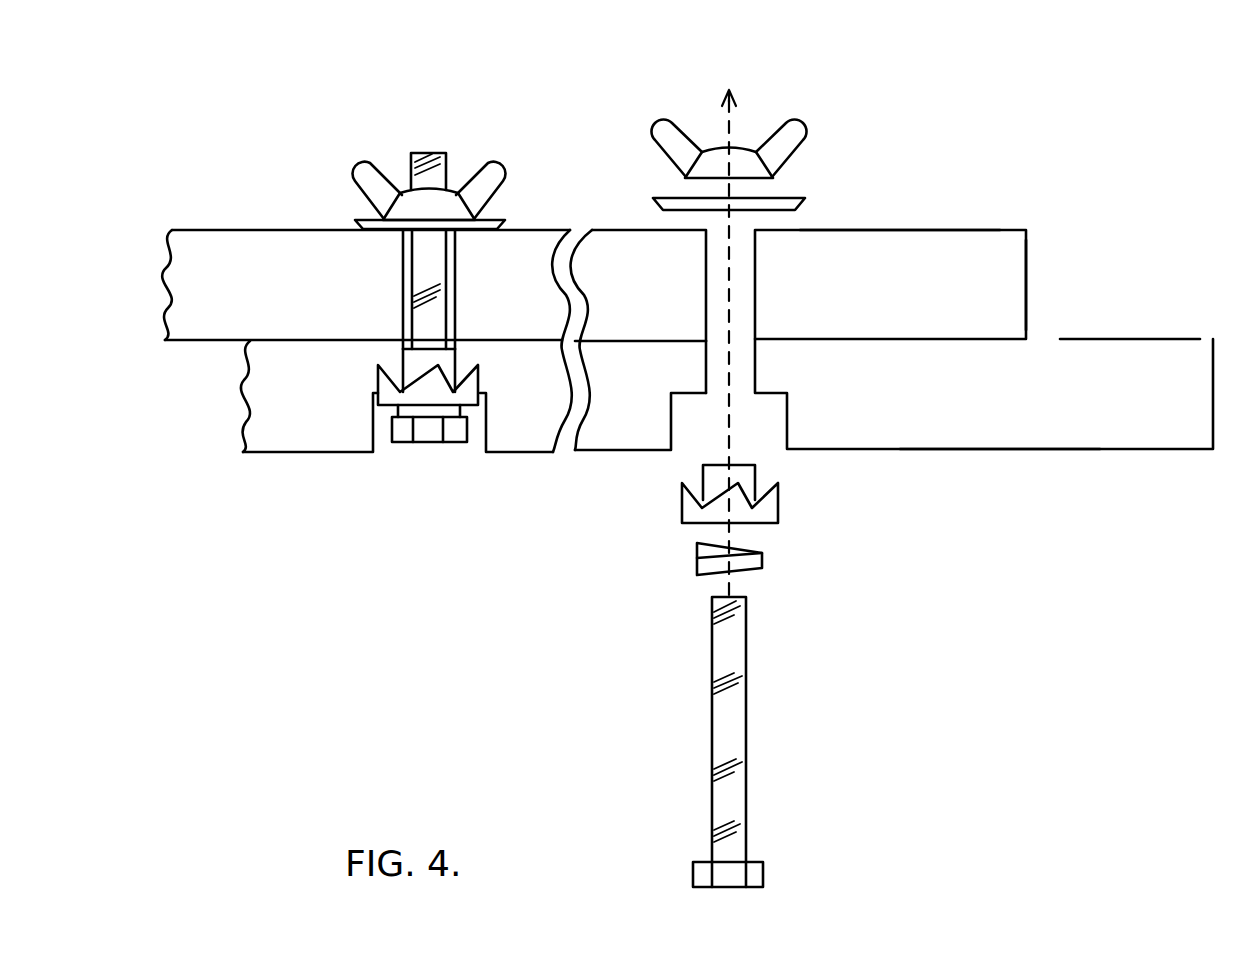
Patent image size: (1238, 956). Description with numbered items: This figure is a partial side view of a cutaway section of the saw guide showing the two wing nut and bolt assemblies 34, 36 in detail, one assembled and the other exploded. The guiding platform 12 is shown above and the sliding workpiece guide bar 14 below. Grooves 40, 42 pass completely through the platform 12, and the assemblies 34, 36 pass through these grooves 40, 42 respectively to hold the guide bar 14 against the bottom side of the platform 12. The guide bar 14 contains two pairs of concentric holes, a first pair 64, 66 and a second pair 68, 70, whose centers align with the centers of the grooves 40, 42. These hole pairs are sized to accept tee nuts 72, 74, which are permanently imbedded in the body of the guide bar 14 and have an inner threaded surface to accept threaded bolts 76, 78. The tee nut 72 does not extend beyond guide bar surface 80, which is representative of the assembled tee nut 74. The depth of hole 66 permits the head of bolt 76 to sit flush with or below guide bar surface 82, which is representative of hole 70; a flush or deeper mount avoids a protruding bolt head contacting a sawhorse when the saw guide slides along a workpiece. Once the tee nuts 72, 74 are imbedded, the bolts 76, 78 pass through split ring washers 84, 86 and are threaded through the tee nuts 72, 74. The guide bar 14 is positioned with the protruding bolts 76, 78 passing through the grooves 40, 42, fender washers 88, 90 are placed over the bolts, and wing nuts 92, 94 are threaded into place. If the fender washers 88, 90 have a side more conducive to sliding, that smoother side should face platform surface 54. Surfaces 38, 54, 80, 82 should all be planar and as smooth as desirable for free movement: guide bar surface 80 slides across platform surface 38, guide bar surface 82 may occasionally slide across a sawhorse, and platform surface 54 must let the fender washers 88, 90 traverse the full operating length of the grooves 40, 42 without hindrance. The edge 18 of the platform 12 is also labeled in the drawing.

The guiding platform 12 is at (890, 284).
The sliding workpiece guide bar 14 is at (984, 394).
The edge of first panel member 18 is at (1027, 278).
The wing nut and bolt assembly 34 is at (383, 127).
The wing nut and bolt assembly 36 is at (755, 97).
The platform surface 38 is at (203, 343).
The groove 40 is at (456, 290).
The groove 42 is at (716, 286).
The platform surface 54 is at (905, 229).
The hole 64 is at (456, 343).
The hole 66 is at (487, 428).
The hole 68 is at (716, 375).
The hole 70 is at (698, 428).
The tee nut 72 is at (408, 363).
The tee nut 74 is at (690, 506).
The threaded bolt 76 is at (427, 272).
The threaded bolt 78 is at (727, 745).
The guide bar surface 80 is at (1173, 338).
The guide bar surface 82 is at (1015, 450).
The split ring washer 84 is at (397, 409).
The split ring washer 86 is at (697, 549).
The fender washer 88 is at (360, 221).
The fender washer 90 is at (663, 205).
The wing nut 92 is at (350, 182).
The wing nut 94 is at (655, 143).